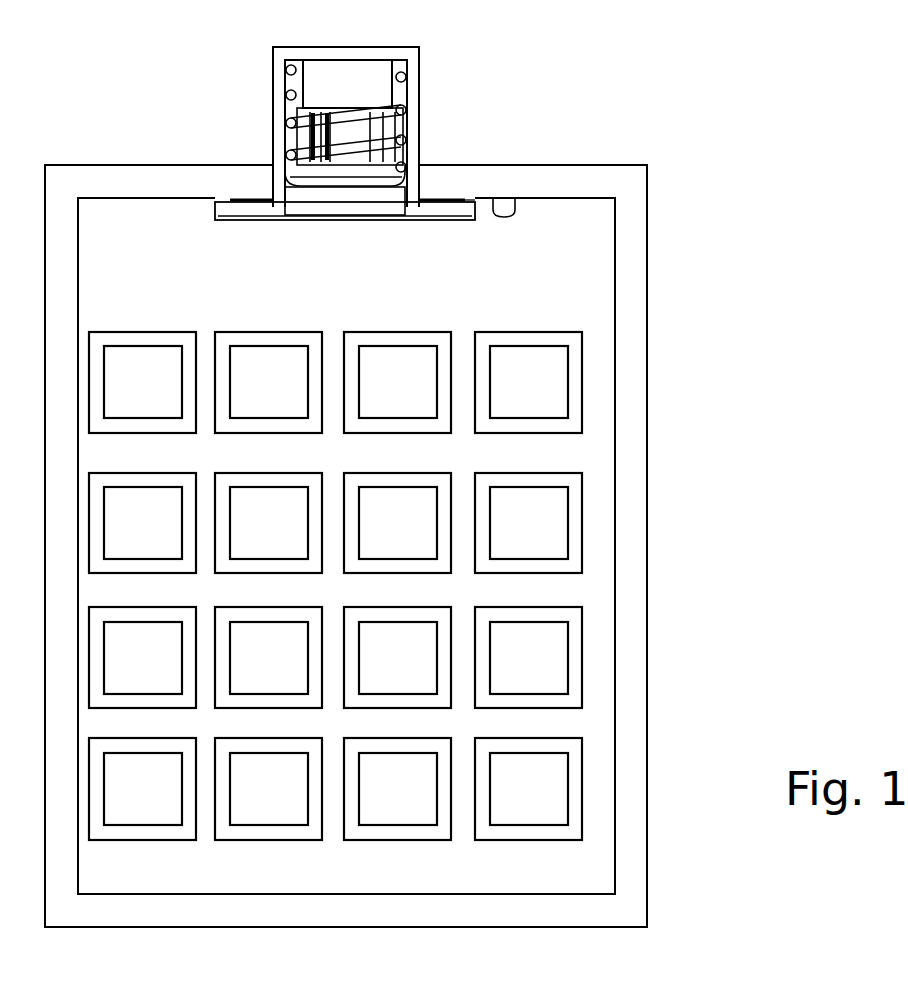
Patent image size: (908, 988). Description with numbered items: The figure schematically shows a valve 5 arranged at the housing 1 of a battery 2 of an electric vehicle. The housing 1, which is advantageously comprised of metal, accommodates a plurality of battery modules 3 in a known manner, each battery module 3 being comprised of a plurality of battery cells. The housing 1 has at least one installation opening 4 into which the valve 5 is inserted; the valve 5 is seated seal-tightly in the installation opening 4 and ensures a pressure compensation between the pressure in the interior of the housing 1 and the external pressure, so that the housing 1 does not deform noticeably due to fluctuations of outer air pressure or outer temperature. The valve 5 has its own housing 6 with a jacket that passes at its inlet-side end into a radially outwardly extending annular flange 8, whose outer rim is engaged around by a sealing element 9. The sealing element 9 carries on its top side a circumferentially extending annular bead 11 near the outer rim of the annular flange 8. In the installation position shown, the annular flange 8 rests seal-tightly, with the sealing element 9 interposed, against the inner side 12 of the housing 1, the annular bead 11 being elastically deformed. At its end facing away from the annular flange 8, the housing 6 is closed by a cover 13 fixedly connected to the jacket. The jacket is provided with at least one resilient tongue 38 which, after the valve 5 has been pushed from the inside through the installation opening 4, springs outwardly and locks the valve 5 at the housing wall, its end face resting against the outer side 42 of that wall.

The housing 1 is at (650, 260).
The battery 2 is at (404, 467).
The battery modules 3 is at (542, 400).
The installation opening 4 is at (418, 187).
The valve 5 is at (363, 111).
The housing 6 is at (278, 127).
The annular flange 8 is at (230, 210).
The sealing element 9 is at (228, 222).
The annular bead 11 is at (463, 200).
The inner side 12 is at (515, 205).
The cover 13 is at (353, 53).
The resilient tongue 38 is at (413, 137).
The outer side 42 is at (588, 165).